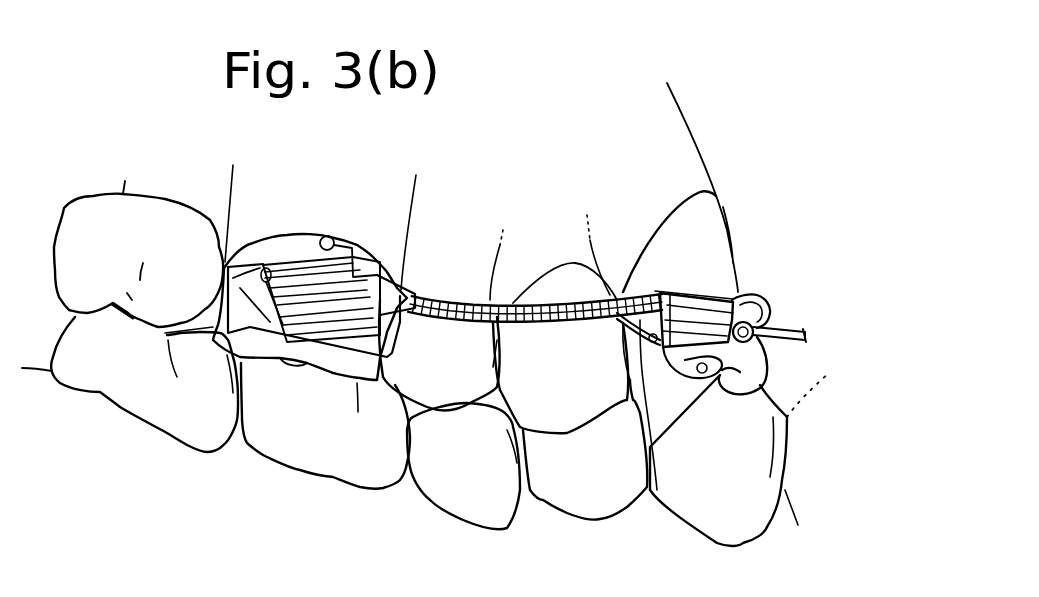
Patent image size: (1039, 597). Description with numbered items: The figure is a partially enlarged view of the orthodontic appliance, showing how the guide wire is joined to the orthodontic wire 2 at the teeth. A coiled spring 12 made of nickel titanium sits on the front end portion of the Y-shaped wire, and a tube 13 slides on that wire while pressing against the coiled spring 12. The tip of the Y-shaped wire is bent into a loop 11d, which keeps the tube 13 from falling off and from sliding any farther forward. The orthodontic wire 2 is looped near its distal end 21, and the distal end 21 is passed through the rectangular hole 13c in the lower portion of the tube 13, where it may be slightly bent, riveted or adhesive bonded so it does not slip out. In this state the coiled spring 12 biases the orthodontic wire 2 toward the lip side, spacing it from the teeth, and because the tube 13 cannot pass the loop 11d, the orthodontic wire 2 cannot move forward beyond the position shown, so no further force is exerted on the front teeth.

The orthodontic wire 2 is at (787, 324).
The coiled spring 12 is at (533, 300).
The tube 13 is at (673, 292).
The loop 11d is at (770, 295).
The distal end 21 is at (628, 332).
The rectangular hole 13c is at (650, 488).